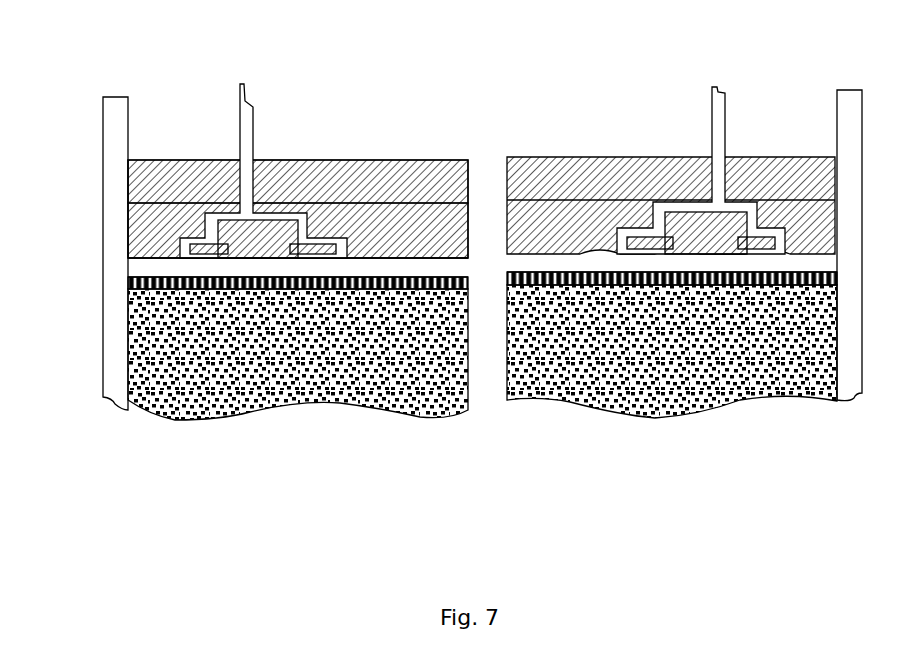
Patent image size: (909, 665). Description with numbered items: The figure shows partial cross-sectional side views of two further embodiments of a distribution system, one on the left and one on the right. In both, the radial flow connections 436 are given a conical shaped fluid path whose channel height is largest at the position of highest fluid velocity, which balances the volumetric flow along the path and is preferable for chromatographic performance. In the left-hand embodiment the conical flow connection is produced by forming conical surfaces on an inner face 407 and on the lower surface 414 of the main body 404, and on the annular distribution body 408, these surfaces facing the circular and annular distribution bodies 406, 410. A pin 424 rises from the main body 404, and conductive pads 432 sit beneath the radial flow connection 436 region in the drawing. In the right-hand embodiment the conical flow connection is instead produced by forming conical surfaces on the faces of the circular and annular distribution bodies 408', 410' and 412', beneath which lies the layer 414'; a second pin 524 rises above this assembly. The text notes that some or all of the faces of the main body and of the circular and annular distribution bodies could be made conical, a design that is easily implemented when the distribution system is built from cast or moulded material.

The main body 404 is at (147, 168).
The circular distribution body 406 is at (400, 185).
The inner face 407 is at (210, 205).
The contact pin 424 is at (248, 132).
The radial flow connection 436 is at (263, 210).
The conductive vias 432 is at (345, 260).
The annular distribution body 410 is at (251, 327).
The lower surface 414 is at (240, 313).
The annular distribution body 408 is at (298, 417).
The contact pin 524 is at (712, 116).
The annular distribution body 412' is at (684, 301).
The annular distribution body 410' is at (676, 404).
The adhesive layer 414' is at (687, 373).
The circular distribution body 408' is at (672, 430).